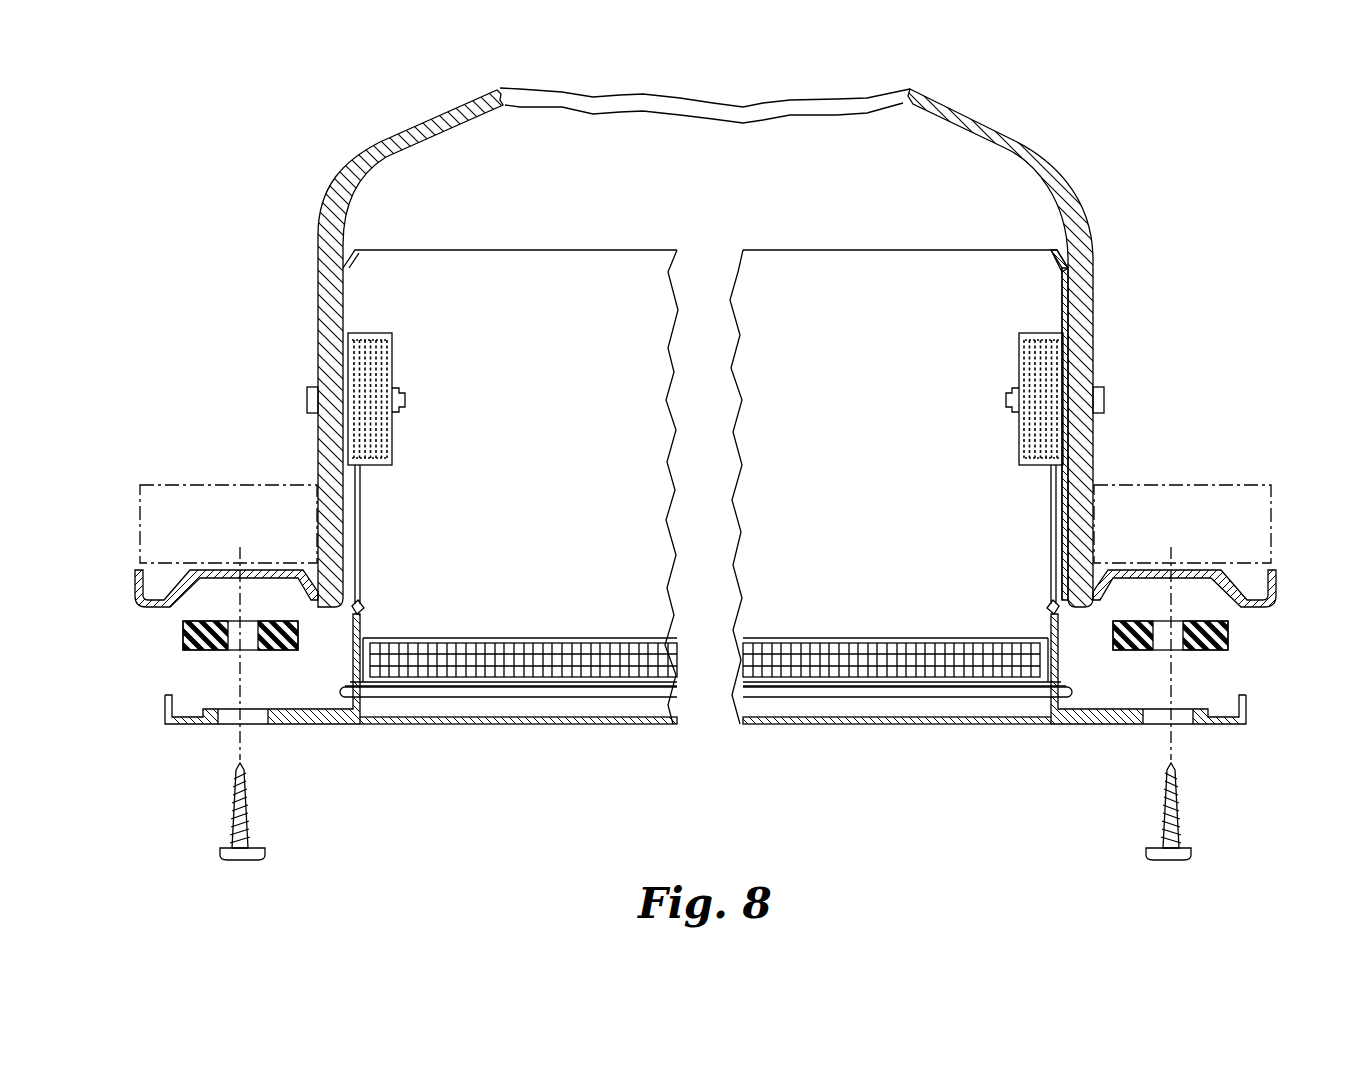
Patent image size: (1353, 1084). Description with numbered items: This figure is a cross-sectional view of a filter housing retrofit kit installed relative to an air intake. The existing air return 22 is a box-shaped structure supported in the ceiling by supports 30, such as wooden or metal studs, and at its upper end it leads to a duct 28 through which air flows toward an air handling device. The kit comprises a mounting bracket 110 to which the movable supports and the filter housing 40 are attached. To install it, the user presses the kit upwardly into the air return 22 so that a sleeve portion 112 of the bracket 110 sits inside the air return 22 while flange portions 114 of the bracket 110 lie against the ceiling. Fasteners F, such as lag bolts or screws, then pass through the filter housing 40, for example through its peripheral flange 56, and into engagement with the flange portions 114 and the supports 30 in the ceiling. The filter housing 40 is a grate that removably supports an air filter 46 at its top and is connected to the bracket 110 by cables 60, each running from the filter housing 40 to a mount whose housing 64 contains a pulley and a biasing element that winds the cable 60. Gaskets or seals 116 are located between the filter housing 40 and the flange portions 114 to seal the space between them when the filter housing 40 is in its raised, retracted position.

The air intake return 22 is at (1108, 258).
The duct 28 is at (1074, 196).
The supports 30 is at (200, 485).
The filter housing 40 is at (527, 733).
The air filter 46 is at (462, 657).
The flange 56 is at (315, 725).
The cables 60 is at (363, 530).
The housing 64 is at (360, 333).
The mounting bracket 110 is at (859, 312).
The sleeve portion 112 is at (1062, 284).
The flange portions 114 is at (134, 582).
The gaskets or seals 116 is at (183, 635).
The fasteners F is at (265, 852).